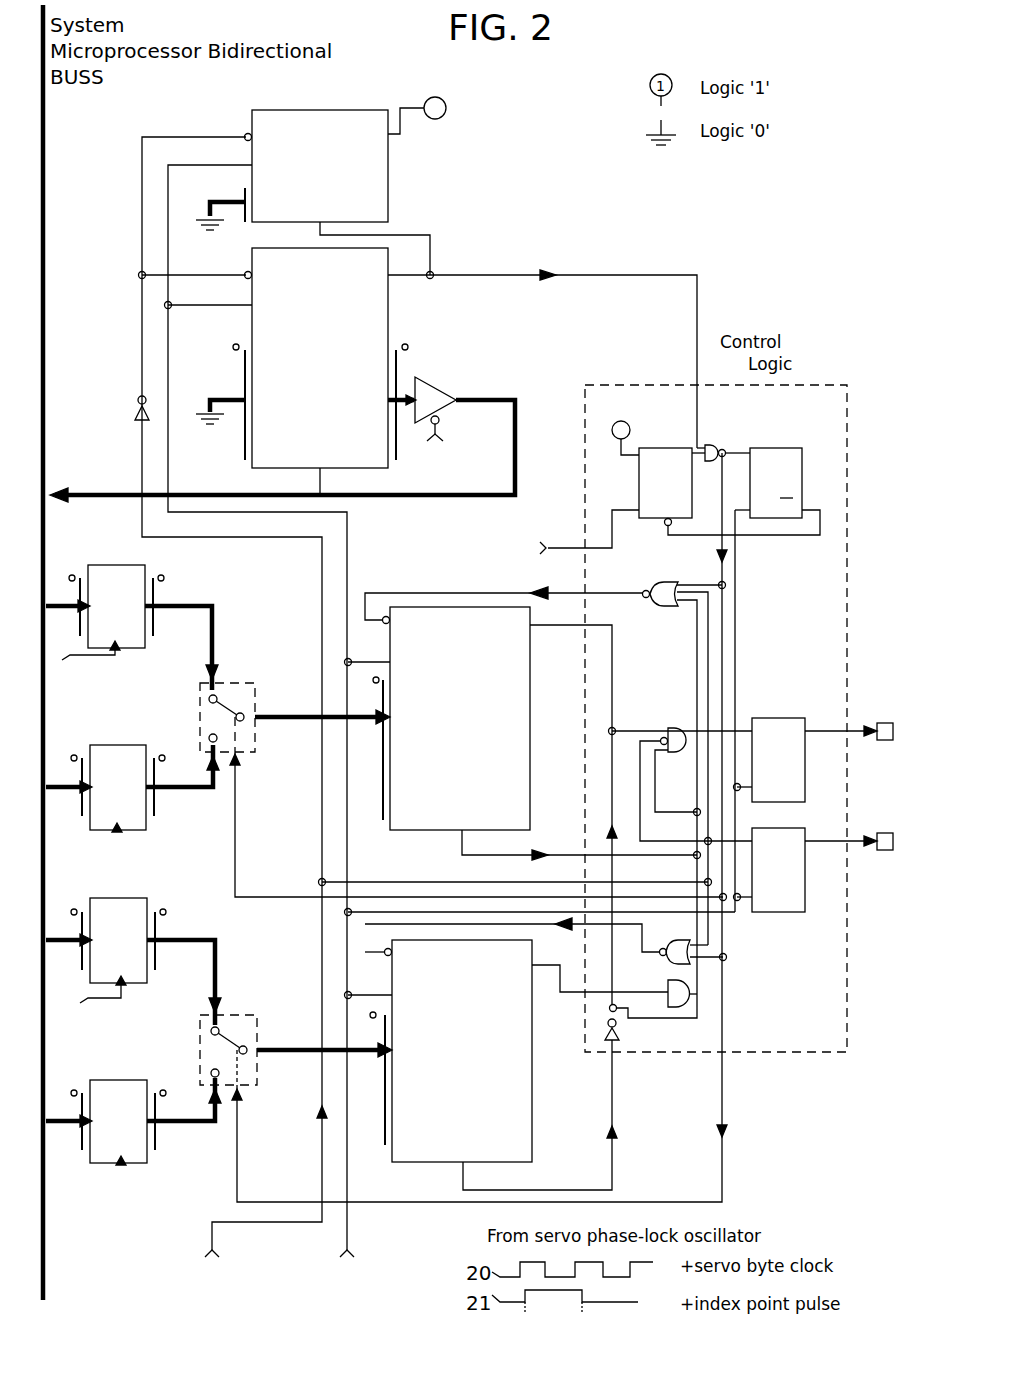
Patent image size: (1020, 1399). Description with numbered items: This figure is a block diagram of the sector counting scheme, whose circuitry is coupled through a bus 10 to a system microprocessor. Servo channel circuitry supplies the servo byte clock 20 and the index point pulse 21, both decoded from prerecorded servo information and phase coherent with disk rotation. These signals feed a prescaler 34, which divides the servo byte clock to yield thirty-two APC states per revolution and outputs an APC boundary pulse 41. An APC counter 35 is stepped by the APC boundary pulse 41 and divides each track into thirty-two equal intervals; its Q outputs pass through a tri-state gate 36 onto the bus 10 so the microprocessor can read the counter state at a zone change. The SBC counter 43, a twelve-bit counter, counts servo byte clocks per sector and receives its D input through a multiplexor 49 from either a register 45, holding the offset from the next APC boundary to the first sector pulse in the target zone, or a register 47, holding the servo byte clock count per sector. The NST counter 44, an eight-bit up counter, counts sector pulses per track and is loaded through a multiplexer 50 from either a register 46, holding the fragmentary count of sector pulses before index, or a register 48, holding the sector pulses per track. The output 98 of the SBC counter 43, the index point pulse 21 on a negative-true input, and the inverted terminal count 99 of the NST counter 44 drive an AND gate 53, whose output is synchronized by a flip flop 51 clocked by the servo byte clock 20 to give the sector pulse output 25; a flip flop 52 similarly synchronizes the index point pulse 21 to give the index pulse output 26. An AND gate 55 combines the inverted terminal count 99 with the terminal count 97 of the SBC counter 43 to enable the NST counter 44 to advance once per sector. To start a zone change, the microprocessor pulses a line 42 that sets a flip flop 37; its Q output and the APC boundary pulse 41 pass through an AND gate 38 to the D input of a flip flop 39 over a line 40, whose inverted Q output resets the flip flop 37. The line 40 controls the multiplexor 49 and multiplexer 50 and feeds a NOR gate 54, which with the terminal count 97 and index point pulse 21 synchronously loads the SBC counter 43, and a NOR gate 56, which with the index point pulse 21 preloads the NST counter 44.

The bus 10 is at (47, 338).
The servo byte clock 20 is at (168, 255).
The index point pulse 21 is at (177, 135).
The sector pulse output 25 is at (868, 745).
The index pulse output 26 is at (862, 852).
The prescaler 34 is at (390, 175).
The APC counter 35 is at (390, 320).
The tri-state gate 36 is at (440, 385).
The flip flop 37 is at (692, 490).
The AND gate 38 is at (712, 444).
The flip flop 39 is at (788, 447).
The line 40 is at (235, 812).
The APC boundary pulse 41 is at (627, 275).
The line 42 is at (612, 530).
The SBC counter 43 is at (532, 695).
The NST counter 44 is at (533, 1053).
The register 45 is at (108, 567).
The register 46 is at (132, 899).
The register 47 is at (112, 747).
The register 48 is at (130, 1082).
The multiplexor 49 is at (256, 706).
The multiplexer 50 is at (260, 1030).
The flip flop 51 is at (806, 770).
The flip flop 52 is at (806, 885).
The AND gate 53 is at (671, 727).
The NOR gate 54 is at (662, 583).
The AND gate 55 is at (692, 1008).
The NOR gate 56 is at (674, 940).
The terminal count 97 is at (522, 853).
The terminal count output 98 is at (613, 640).
The terminal count output 99 is at (615, 1185).